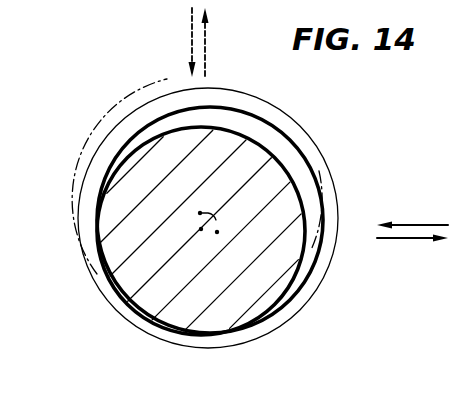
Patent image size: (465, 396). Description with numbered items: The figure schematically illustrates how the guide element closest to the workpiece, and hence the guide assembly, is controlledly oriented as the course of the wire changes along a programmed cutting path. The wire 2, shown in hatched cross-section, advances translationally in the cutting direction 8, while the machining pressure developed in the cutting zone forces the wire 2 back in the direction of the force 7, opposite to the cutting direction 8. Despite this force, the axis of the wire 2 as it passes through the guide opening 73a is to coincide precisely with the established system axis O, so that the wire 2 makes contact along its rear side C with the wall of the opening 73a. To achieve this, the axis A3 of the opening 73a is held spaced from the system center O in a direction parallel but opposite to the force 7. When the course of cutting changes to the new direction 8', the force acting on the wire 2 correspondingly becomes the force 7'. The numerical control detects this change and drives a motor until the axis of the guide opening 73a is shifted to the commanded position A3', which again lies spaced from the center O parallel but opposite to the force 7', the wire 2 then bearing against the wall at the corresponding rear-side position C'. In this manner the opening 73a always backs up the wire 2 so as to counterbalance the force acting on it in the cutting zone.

The wire 2 is at (169, 320).
The guide opening 73a is at (313, 303).
The rear side of the wire C is at (187, 220).
The rear side contact position after course change C' is at (212, 358).
The system axis O is at (201, 229).
The axis of the guide opening A3 is at (240, 254).
The commanded position of the guide opening axis A3' is at (214, 190).
The machining force 7 is at (412, 205).
The cutting direction 8 is at (412, 264).
The changed machining force 7' is at (169, 42).
The changed cutting direction 8' is at (226, 42).